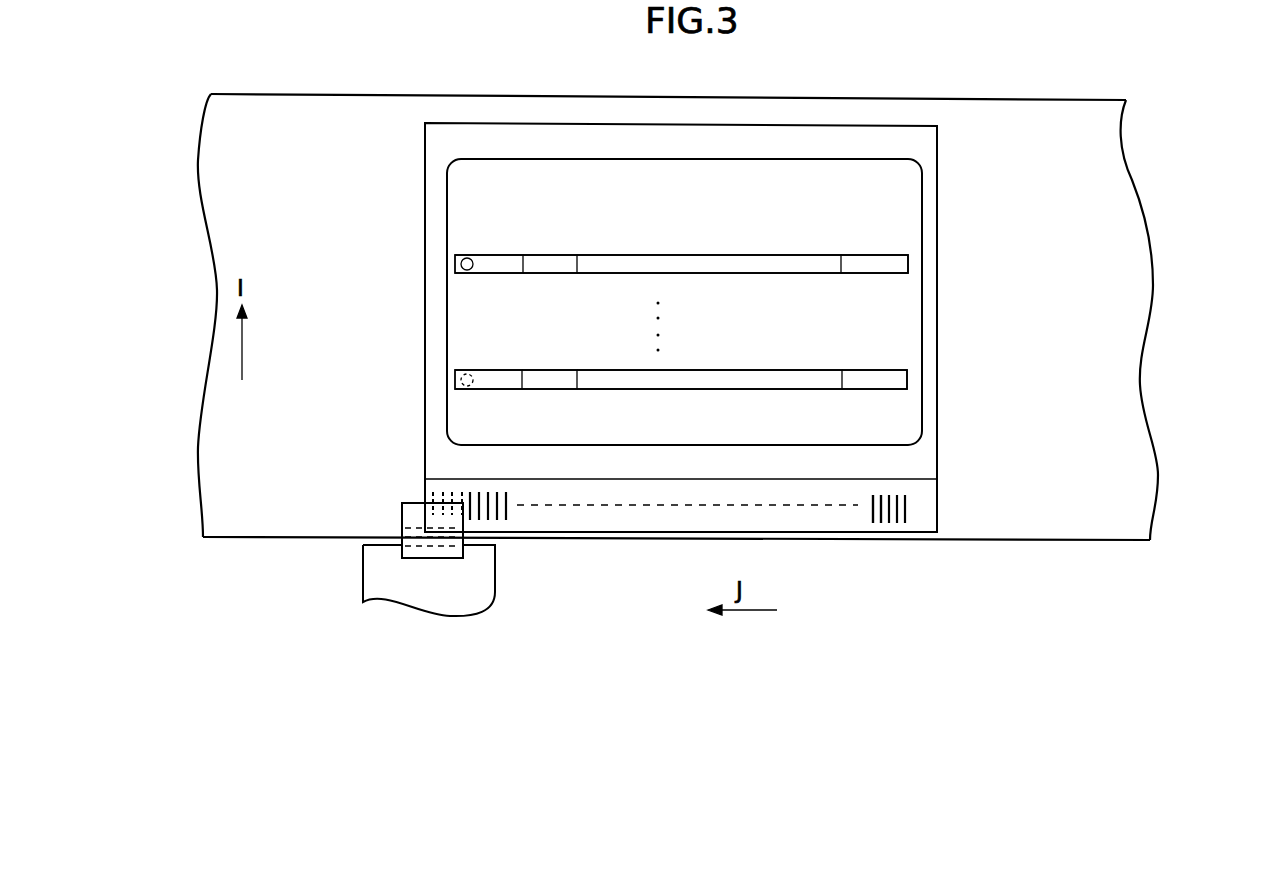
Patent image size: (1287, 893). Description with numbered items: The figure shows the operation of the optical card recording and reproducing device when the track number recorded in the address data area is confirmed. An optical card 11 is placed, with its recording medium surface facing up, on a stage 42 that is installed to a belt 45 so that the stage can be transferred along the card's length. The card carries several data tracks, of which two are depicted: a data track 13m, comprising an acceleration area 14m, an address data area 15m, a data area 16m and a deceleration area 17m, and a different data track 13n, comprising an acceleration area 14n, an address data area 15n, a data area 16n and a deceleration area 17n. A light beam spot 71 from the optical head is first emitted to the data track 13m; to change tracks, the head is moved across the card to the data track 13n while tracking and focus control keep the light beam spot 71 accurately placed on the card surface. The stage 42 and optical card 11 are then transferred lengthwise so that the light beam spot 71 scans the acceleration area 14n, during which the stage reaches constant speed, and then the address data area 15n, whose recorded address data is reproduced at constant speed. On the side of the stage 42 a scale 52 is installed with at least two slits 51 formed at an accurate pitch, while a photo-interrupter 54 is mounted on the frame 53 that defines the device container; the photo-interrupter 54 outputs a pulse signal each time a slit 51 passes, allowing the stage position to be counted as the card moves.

The optical card 11 is at (925, 180).
The data track 13n is at (741, 239).
The data track 13m is at (743, 403).
The acceleration area 14n is at (501, 255).
The address data area 15n is at (565, 255).
The data area 16n is at (727, 258).
The deceleration area 17n is at (858, 258).
The acceleration area 14m is at (500, 389).
The address data area 15m is at (562, 389).
The data area 16m is at (695, 389).
The deceleration area 17m is at (859, 389).
The light beam spot 71 is at (460, 264).
The stage 42 is at (920, 457).
The belt 45 is at (1143, 322).
The slits 51 is at (880, 520).
The scale 52 is at (923, 512).
The frame 53 is at (372, 575).
The photo-interrupter 54 is at (405, 515).